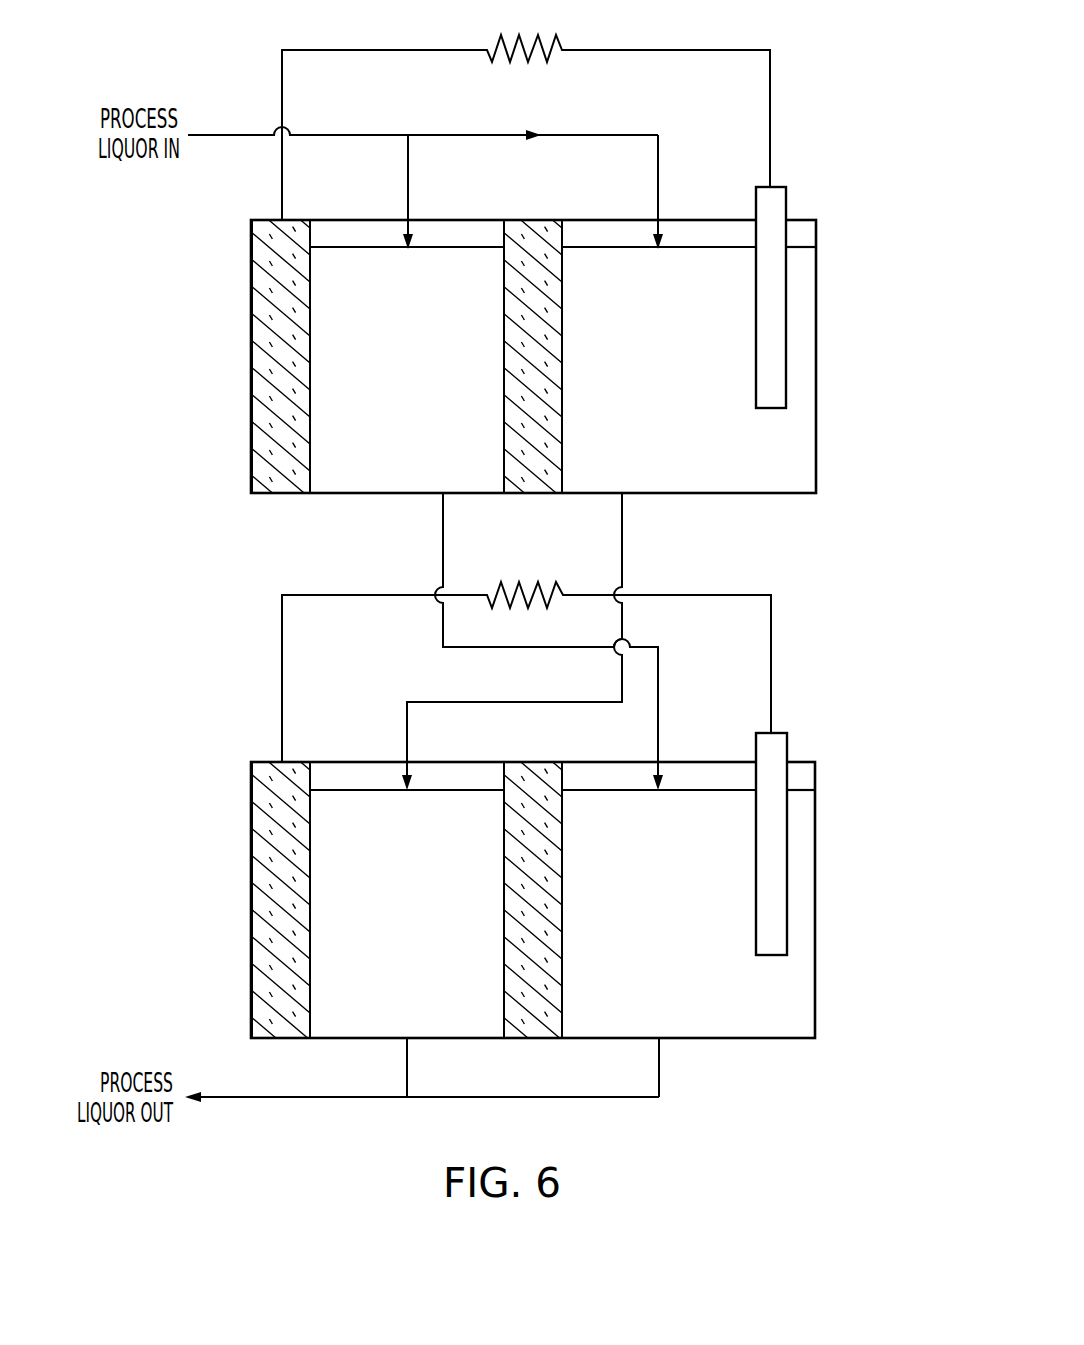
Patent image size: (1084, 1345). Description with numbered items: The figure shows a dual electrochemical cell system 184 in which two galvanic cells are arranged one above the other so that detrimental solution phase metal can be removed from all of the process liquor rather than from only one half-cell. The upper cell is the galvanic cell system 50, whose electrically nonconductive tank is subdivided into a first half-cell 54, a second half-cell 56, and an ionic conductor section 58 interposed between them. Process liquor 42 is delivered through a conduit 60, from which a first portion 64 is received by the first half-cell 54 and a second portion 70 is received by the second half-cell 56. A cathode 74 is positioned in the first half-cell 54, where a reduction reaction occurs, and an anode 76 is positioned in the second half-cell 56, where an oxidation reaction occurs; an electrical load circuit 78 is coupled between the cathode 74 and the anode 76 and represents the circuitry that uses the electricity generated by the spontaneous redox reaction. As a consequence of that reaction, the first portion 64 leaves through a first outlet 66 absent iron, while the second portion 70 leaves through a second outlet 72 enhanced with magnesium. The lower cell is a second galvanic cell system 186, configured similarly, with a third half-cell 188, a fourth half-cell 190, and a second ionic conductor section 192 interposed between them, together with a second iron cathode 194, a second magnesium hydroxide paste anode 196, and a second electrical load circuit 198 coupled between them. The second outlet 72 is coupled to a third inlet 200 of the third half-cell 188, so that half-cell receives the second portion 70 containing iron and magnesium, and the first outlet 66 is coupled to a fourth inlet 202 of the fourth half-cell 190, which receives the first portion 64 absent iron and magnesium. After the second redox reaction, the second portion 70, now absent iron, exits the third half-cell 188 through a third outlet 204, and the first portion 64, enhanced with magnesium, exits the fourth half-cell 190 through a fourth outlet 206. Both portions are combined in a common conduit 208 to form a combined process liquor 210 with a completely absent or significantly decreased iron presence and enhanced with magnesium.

The process liquor 42 is at (465, 135).
The galvanic cell system 50 is at (840, 100).
The first half-cell 54 is at (612, 235).
The second half-cell 56 is at (467, 235).
The ionic conductor section 58 is at (533, 225).
The conduit 60 is at (360, 135).
The first portion of process liquor 64 is at (794, 247).
The first outlet 66 is at (623, 520).
The second portion of process liquor 70 is at (367, 243).
The second outlet 72 is at (445, 518).
The cathode 74 is at (781, 340).
The anode 76 is at (252, 295).
The electrical load circuit 78 is at (539, 35).
The dual electrochemical cell system 184 is at (838, 1195).
The second galvanic cell system 186 is at (840, 650).
The third half-cell 188 is at (623, 770).
The fourth half-cell 190 is at (330, 765).
The second ionic conductor section 192 is at (535, 772).
The second iron cathode 194 is at (779, 875).
The second magnesium hydroxide paste anode 196 is at (253, 845).
The second electrical load circuit 198 is at (538, 582).
The third inlet 200 is at (661, 765).
The fourth inlet 202 is at (400, 768).
The third outlet 204 is at (660, 1065).
The fourth outlet 206 is at (408, 1065).
The common conduit 208 is at (338, 1098).
The combined process liquor 210 is at (245, 1098).